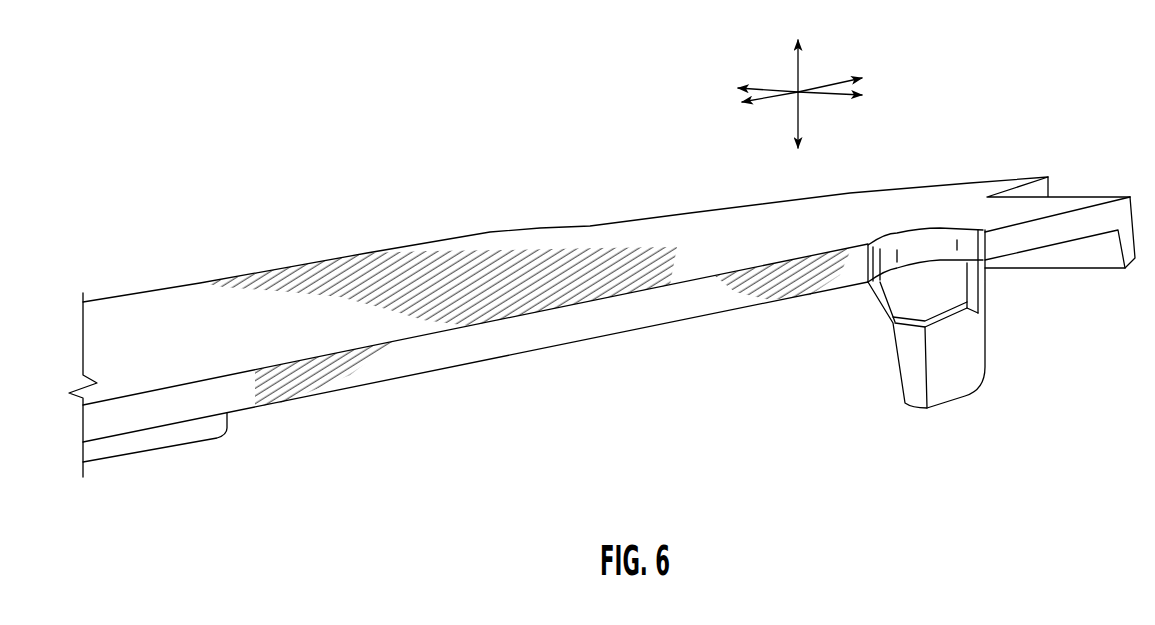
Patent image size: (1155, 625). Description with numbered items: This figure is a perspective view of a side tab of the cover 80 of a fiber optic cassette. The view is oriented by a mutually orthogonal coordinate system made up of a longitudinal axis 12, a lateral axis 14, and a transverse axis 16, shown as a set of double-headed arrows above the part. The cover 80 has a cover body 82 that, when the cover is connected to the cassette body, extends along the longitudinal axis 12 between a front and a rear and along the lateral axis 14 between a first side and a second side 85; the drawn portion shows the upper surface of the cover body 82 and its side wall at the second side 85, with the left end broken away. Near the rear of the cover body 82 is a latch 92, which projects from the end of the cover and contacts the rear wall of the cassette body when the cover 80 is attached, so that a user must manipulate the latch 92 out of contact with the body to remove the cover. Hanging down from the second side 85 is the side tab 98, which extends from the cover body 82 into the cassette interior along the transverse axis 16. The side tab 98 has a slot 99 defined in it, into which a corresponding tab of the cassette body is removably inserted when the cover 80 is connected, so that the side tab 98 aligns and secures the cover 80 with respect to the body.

The longitudinal axis 12 is at (833, 80).
The lateral axis 14 is at (768, 89).
The transverse axis 16 is at (800, 66).
The cover 80 is at (602, 291).
The cover body 82 is at (540, 237).
The second side 85 is at (637, 315).
The latch 92 is at (1011, 181).
The side tab 98 is at (898, 339).
The slot 99 is at (907, 293).